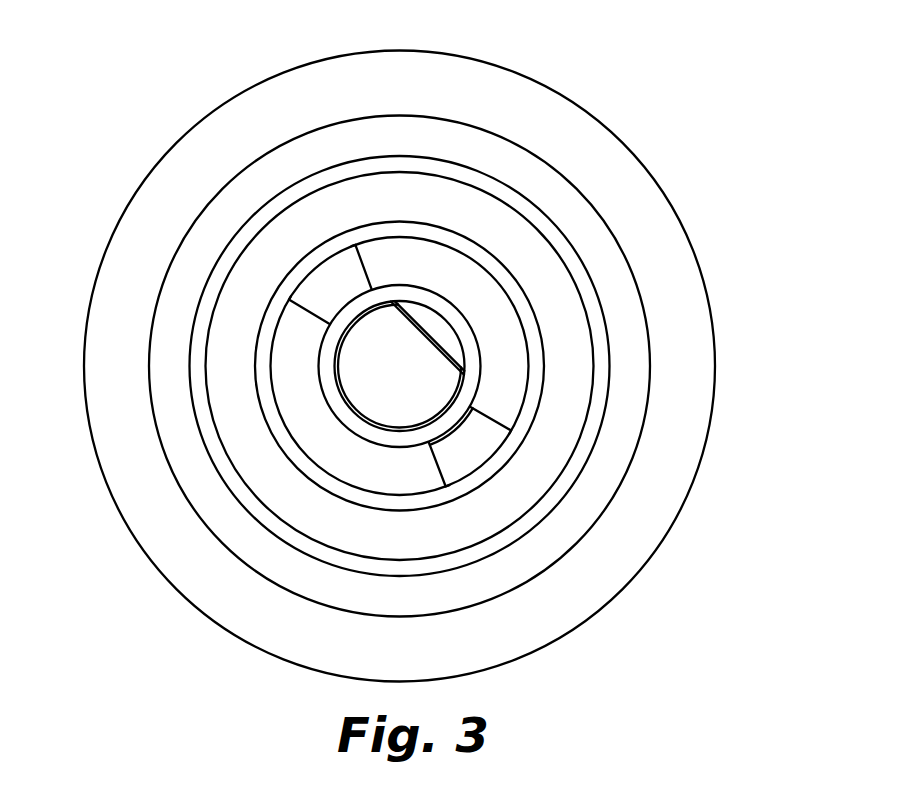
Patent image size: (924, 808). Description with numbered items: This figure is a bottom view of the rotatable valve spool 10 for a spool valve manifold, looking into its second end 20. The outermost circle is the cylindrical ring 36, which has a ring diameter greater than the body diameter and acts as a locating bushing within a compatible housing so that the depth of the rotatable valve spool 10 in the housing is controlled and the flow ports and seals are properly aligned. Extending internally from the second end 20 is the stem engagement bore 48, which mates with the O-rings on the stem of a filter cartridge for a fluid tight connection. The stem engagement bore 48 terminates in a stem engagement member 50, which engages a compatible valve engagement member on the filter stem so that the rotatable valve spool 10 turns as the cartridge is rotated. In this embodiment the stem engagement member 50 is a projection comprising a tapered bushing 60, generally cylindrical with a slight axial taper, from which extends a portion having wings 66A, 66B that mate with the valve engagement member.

The rotatable valve spool 10 is at (675, 95).
The second end 20 is at (543, 648).
The cylindrical ring 36 is at (682, 470).
The stem engagement bore 48 is at (613, 362).
The stem engagement member 50 is at (368, 427).
The tapered bushing 60 is at (300, 410).
The wing 66A is at (330, 287).
The wing 66B is at (465, 450).